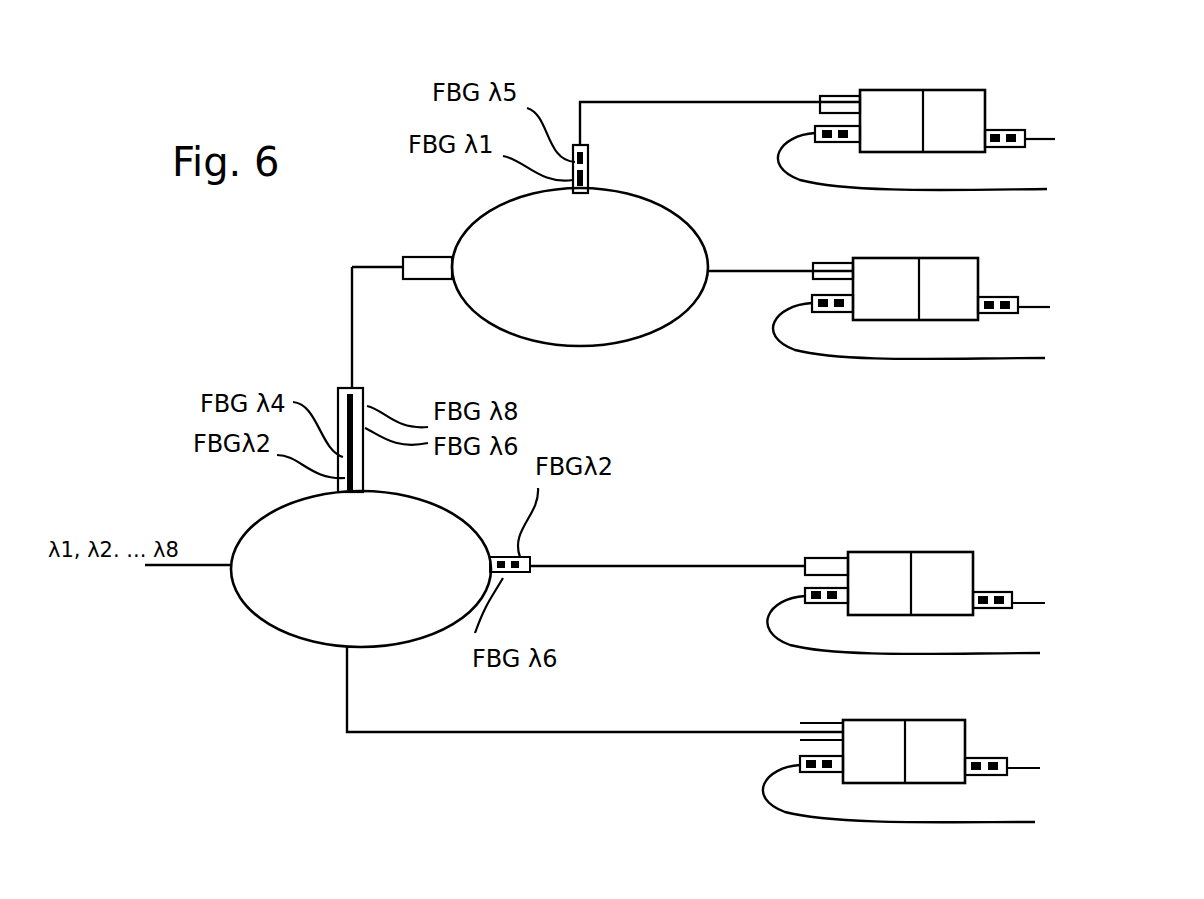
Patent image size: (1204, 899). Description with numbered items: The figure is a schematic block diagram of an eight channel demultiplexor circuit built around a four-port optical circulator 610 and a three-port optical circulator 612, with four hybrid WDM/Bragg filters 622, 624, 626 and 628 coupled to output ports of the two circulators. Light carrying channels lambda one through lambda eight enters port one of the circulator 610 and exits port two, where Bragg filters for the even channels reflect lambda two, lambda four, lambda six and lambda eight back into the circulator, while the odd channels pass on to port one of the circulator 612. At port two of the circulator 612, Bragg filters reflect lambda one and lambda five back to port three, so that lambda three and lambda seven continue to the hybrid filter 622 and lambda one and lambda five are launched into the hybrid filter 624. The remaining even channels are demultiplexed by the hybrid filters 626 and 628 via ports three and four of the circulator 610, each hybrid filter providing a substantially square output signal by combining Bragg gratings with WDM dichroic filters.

The 4-port optical circulator 610 is at (257, 524).
The 3-port optical circulator 612 is at (463, 222).
The hybrid WDM/Bragg filter 622 is at (1003, 70).
The hybrid WDM/Bragg filter 624 is at (998, 258).
The hybrid WDM/Bragg filter 626 is at (990, 542).
The hybrid WDM/Bragg filter 628 is at (1050, 738).